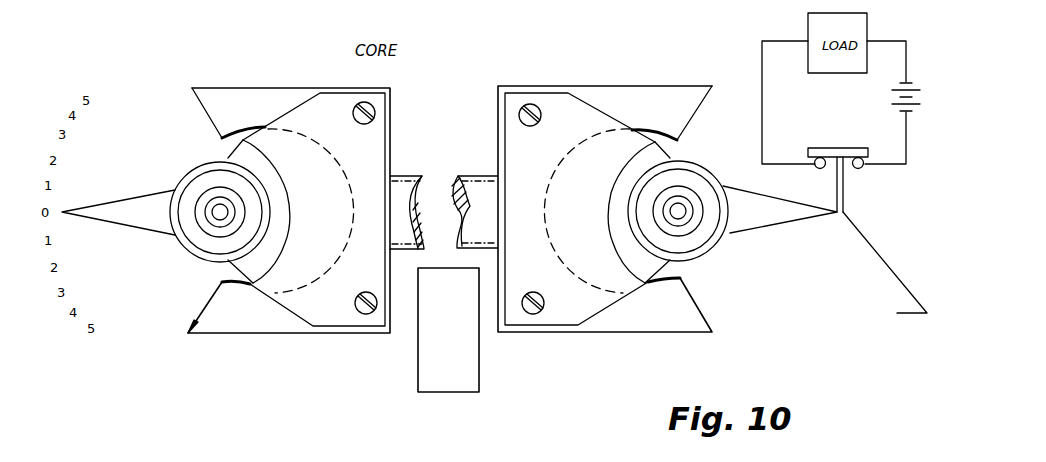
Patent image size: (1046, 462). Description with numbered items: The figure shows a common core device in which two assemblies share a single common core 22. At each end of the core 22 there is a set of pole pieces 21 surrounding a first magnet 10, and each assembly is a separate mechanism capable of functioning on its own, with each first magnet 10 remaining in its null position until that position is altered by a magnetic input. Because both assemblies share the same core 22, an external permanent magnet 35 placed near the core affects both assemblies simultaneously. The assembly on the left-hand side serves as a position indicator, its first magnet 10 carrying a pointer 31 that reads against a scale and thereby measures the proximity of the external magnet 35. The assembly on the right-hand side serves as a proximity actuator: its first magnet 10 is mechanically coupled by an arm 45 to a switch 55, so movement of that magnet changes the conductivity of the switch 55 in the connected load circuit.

The first magnet 10 is at (193, 262).
The pole pieces 21 is at (212, 88).
The common core 22 is at (412, 172).
The pointer 31 is at (118, 200).
The external magnet 35 is at (480, 368).
The arm 45 is at (780, 230).
The switch 55 is at (849, 170).